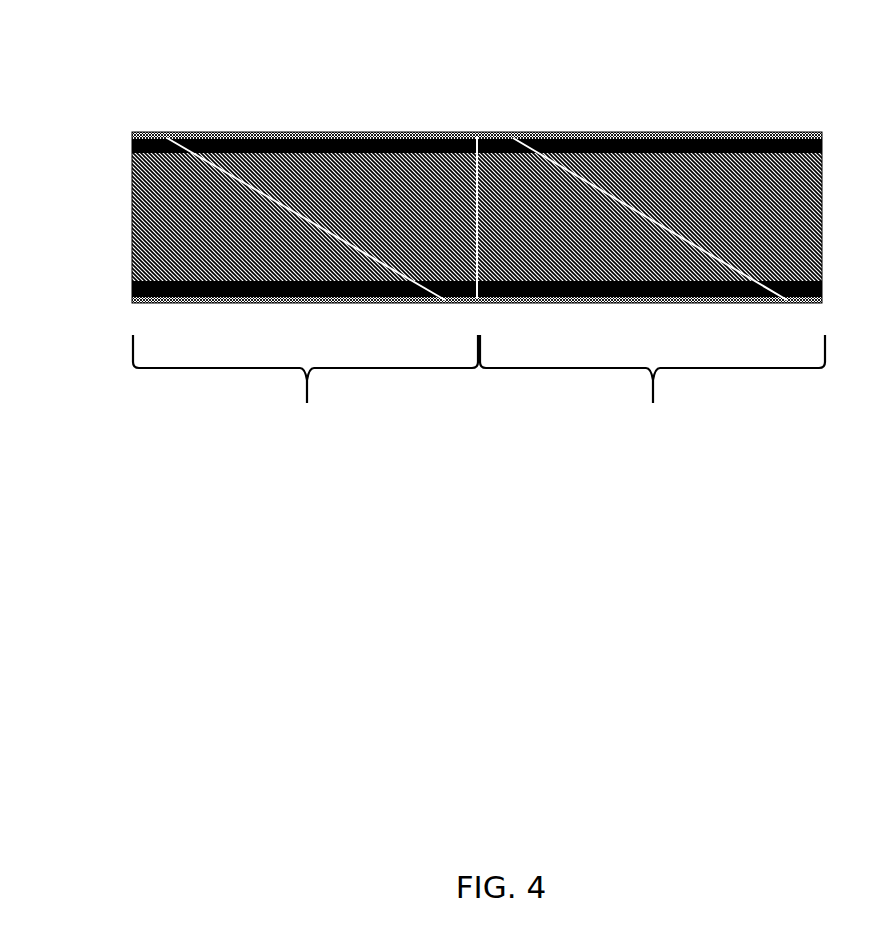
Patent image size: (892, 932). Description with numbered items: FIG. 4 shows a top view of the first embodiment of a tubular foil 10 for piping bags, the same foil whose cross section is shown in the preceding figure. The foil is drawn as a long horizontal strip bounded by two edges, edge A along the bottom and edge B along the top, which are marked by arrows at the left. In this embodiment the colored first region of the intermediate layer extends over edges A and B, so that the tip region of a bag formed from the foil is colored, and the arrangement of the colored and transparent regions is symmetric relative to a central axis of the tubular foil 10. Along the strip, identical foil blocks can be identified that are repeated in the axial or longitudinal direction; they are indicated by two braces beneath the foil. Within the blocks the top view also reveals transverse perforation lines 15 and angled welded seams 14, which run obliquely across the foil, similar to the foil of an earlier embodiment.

The tubular foil 10 is at (222, 53).
The angled welded seams 14 is at (303, 213).
The transverse perforation lines 15 is at (475, 220).
The edge A is at (117, 297).
The edge B is at (117, 133).